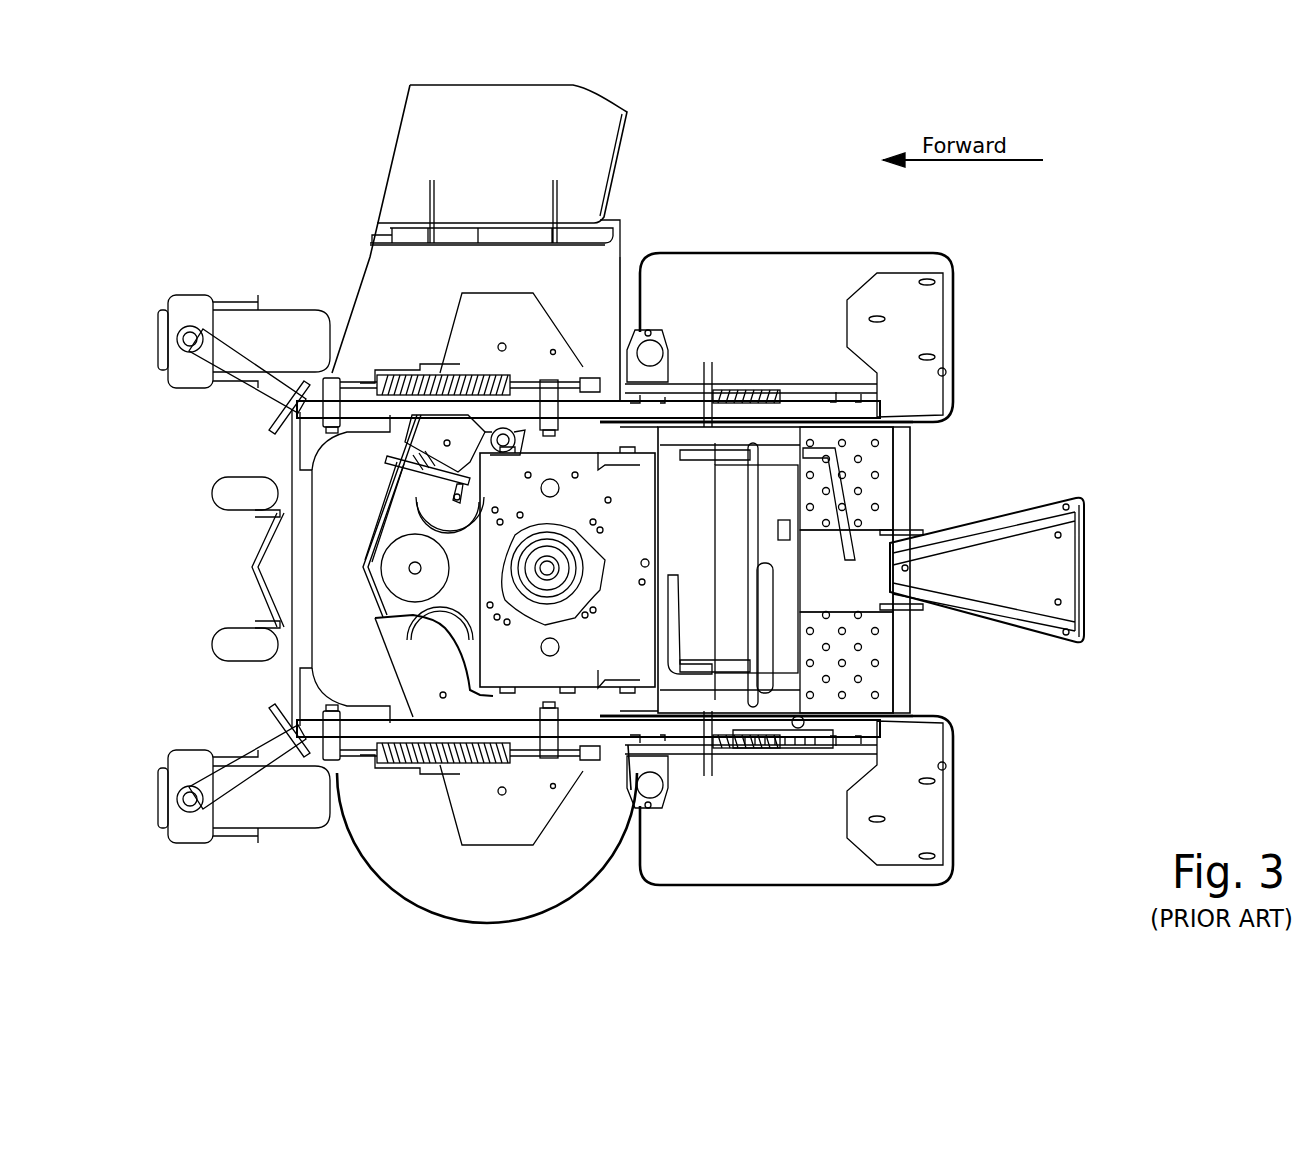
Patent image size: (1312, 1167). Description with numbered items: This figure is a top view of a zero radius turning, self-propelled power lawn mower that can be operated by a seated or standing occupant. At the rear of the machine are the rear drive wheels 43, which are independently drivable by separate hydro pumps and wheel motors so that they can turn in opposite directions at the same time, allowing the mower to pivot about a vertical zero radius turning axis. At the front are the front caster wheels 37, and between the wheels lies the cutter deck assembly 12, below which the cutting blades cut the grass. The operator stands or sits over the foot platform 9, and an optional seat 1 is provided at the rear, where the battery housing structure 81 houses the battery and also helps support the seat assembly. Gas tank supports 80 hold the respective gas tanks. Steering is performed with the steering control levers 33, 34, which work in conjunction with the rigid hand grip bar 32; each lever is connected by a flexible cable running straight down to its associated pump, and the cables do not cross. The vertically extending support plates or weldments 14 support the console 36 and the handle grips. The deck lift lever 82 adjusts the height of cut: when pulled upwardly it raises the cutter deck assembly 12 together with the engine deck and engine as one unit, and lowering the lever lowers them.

The seat 1 is at (1000, 553).
The foot platform 9 is at (868, 483).
The cutter deck assembly 12 is at (500, 893).
The vertically extending support plates or weldments 14 is at (710, 423).
The rigid hand grip bar 32 is at (755, 500).
The steering control lever 33 is at (673, 618).
The steering control lever 34 is at (848, 517).
The console 36 is at (790, 640).
The front caster wheels 37 is at (294, 320).
The rear drive wheels 43 is at (822, 283).
The gas tank supports 80 is at (928, 322).
The battery housing structure 81 is at (862, 597).
The deck lift lever 82 is at (520, 403).